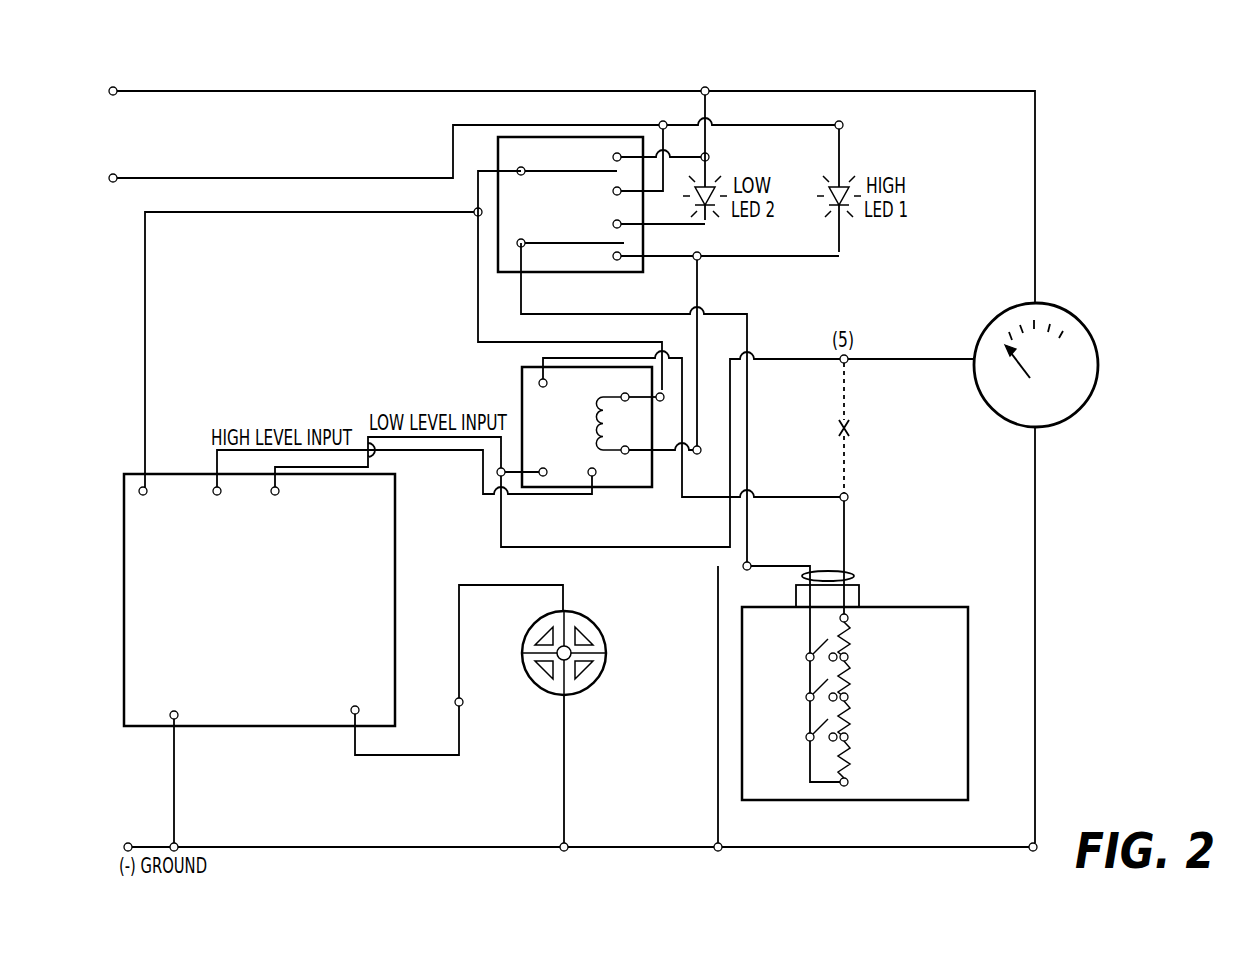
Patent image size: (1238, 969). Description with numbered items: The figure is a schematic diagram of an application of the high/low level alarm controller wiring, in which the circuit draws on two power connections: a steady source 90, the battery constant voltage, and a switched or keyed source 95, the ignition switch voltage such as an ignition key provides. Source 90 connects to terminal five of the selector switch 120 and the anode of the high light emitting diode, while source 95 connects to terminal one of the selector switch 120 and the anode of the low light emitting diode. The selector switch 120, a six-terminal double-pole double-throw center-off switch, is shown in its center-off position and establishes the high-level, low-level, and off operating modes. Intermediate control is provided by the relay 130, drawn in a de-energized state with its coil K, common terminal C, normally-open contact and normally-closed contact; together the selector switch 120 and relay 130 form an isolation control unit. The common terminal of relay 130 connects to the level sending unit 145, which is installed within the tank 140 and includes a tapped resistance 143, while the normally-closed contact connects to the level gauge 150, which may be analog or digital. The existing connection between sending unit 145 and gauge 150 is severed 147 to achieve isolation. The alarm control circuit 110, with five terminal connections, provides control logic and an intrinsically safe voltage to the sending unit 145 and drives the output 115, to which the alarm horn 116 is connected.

The switched or keyed source 95 is at (572, 194).
The steady source 90 is at (476, 150).
The alarm control circuit 110 is at (247, 637).
The output 115 is at (474, 701).
The alarm horn 116 is at (606, 645).
The selector switch 120 is at (566, 208).
The relay 130 is at (522, 395).
The tank 140 is at (968, 694).
The sender resistor 143 is at (847, 635).
The level sending unit 145 is at (913, 557).
The severed connection 147 is at (860, 428).
The level gauge 150 is at (1062, 310).